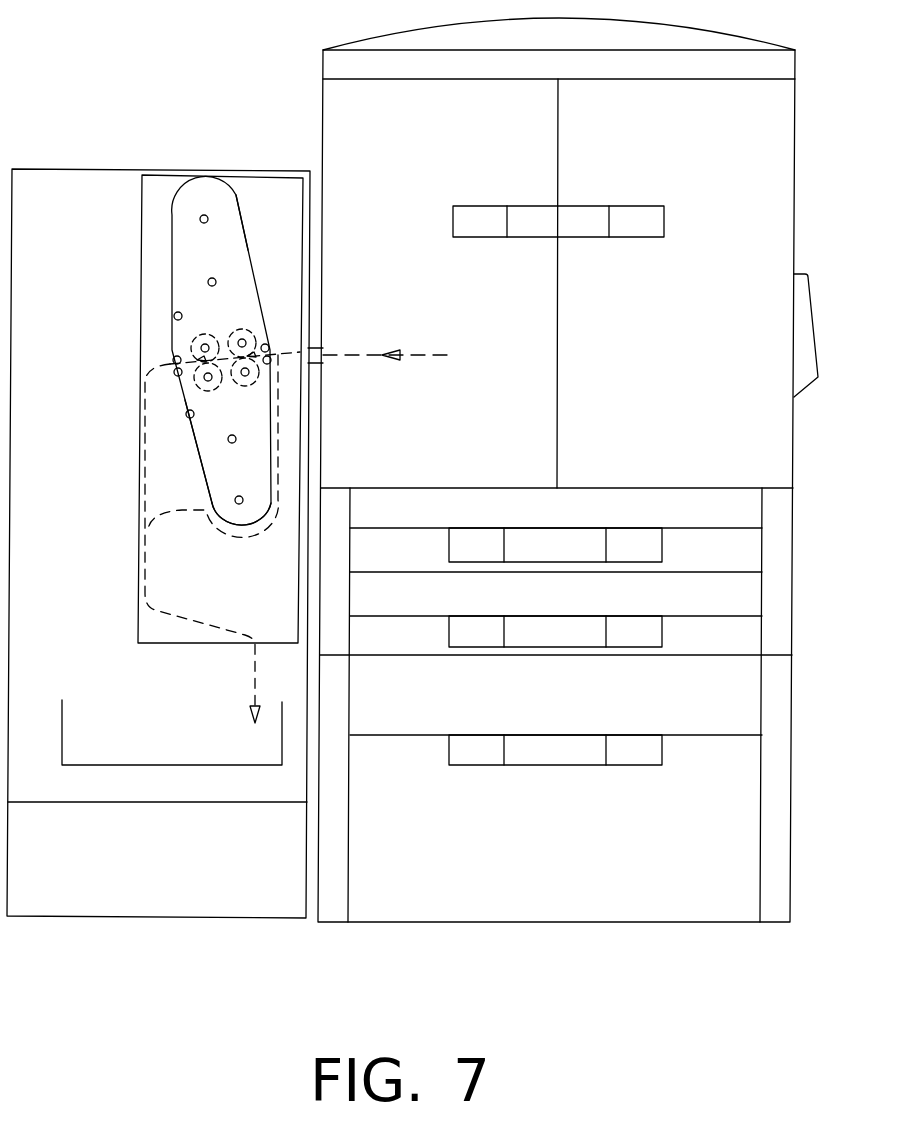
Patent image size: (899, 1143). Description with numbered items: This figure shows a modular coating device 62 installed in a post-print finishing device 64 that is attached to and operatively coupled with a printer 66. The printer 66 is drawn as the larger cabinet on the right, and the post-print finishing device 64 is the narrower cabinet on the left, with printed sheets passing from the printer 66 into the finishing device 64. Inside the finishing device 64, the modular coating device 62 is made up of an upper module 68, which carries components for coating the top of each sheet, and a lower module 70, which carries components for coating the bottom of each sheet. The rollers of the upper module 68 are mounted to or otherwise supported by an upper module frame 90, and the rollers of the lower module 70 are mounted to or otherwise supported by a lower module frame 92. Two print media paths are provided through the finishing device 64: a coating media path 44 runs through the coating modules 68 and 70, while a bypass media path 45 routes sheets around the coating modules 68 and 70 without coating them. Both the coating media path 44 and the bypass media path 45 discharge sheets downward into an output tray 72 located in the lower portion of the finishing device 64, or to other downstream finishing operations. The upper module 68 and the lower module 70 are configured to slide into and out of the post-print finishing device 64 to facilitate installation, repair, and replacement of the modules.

The printer 66 is at (795, 112).
The post-print finishing device 64 is at (130, 135).
The output tray 72 is at (62, 746).
The modular coating device 62 is at (165, 276).
The upper module frame 90 is at (238, 257).
The upper module 68 is at (236, 212).
The lower module 70 is at (192, 452).
The lower module frame 92 is at (250, 510).
The bypass media path 45 is at (280, 428).
The coating media path 44 is at (150, 378).